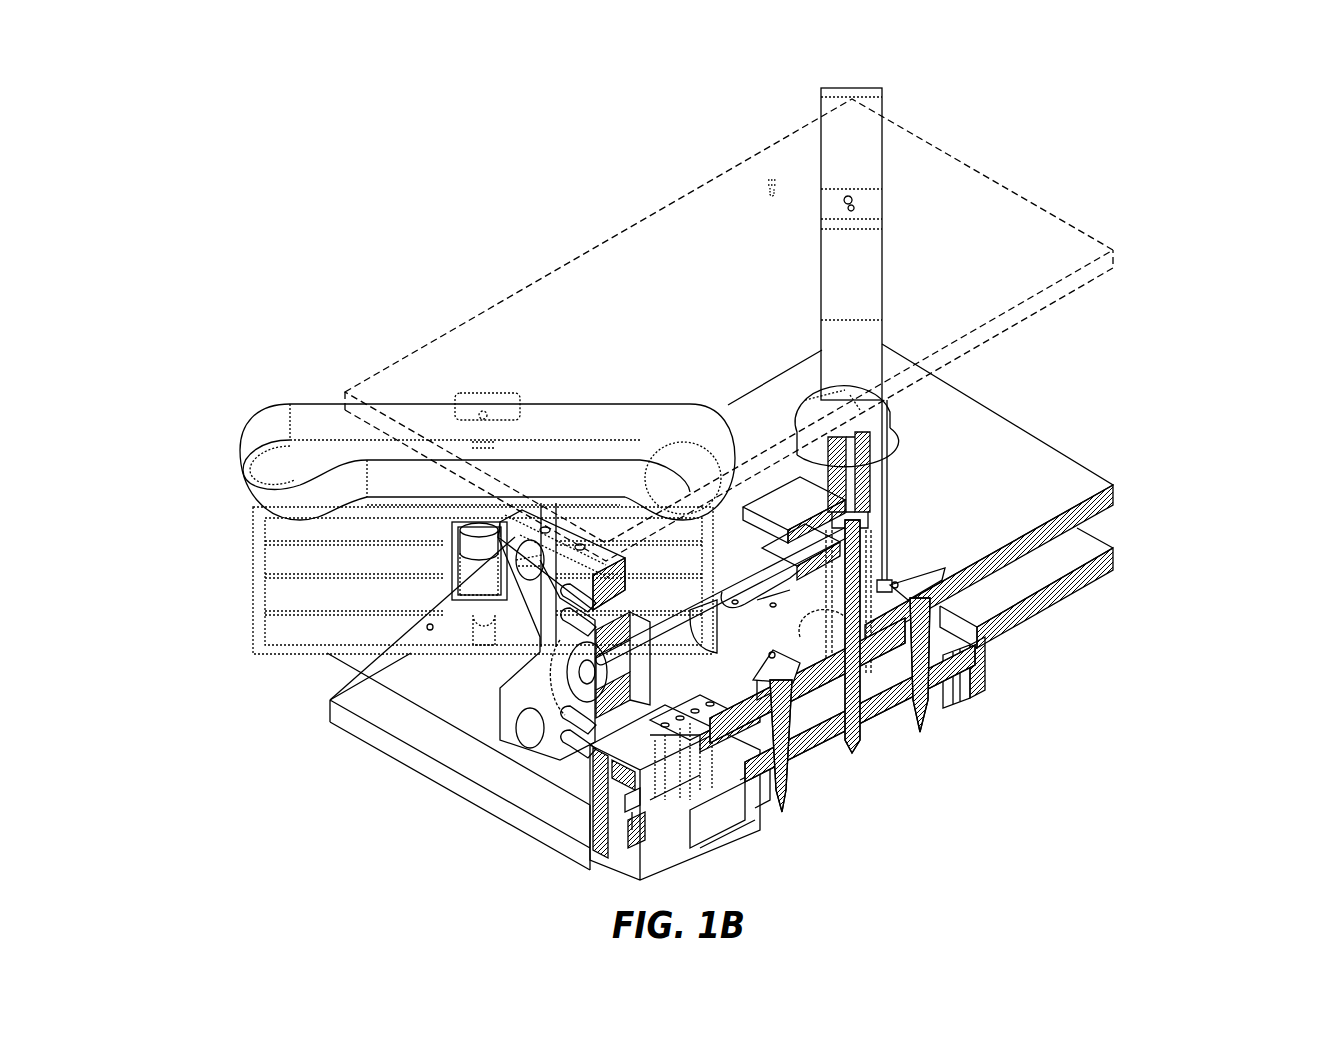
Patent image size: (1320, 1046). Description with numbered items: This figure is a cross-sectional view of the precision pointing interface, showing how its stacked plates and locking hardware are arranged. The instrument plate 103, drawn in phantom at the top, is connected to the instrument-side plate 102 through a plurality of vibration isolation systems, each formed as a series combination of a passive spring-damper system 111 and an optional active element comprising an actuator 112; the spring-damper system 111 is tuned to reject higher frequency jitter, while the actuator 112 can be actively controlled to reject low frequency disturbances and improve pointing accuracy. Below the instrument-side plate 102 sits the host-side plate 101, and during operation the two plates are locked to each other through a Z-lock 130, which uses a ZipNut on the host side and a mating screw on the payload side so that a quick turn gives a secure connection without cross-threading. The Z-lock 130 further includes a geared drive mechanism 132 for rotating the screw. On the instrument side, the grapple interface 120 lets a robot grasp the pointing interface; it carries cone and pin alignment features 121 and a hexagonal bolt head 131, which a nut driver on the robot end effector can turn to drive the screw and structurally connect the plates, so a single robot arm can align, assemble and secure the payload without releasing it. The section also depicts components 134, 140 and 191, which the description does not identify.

The host-side plate 101 is at (1062, 563).
The instrument-side plate 102 is at (1067, 487).
The instrument plate 103 is at (578, 257).
The passive spring-damper system 111 is at (866, 92).
The actuator 112 is at (480, 562).
The grapple interface 120 is at (555, 650).
The cone and pin alignment features 121 is at (490, 580).
The Z-lock 130 is at (845, 400).
The hexagonal bolt head 131 is at (590, 668).
The geared drive mechanism 132 is at (1042, 602).
The plunger 134 is at (858, 750).
The needle 140 is at (928, 714).
The cartridge assembly 191 is at (984, 803).